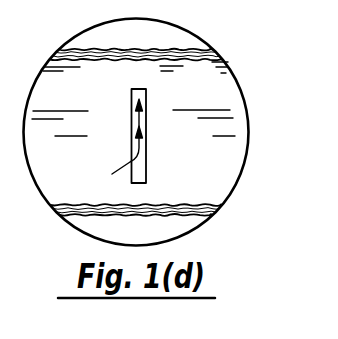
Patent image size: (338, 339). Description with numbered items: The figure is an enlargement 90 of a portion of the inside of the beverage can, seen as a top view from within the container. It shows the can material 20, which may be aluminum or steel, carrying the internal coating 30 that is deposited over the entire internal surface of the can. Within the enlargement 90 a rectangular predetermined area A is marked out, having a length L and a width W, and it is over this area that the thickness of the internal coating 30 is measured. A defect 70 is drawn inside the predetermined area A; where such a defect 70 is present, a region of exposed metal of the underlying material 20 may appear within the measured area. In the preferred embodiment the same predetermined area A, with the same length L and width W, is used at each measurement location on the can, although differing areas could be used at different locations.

The enlargement 90 is at (261, 122).
The internal coating 30 is at (97, 60).
The material 20 is at (200, 60).
The defect 70 is at (141, 108).
The width W is at (136, 75).
The length L is at (121, 134).
The predetermined area A is at (171, 183).